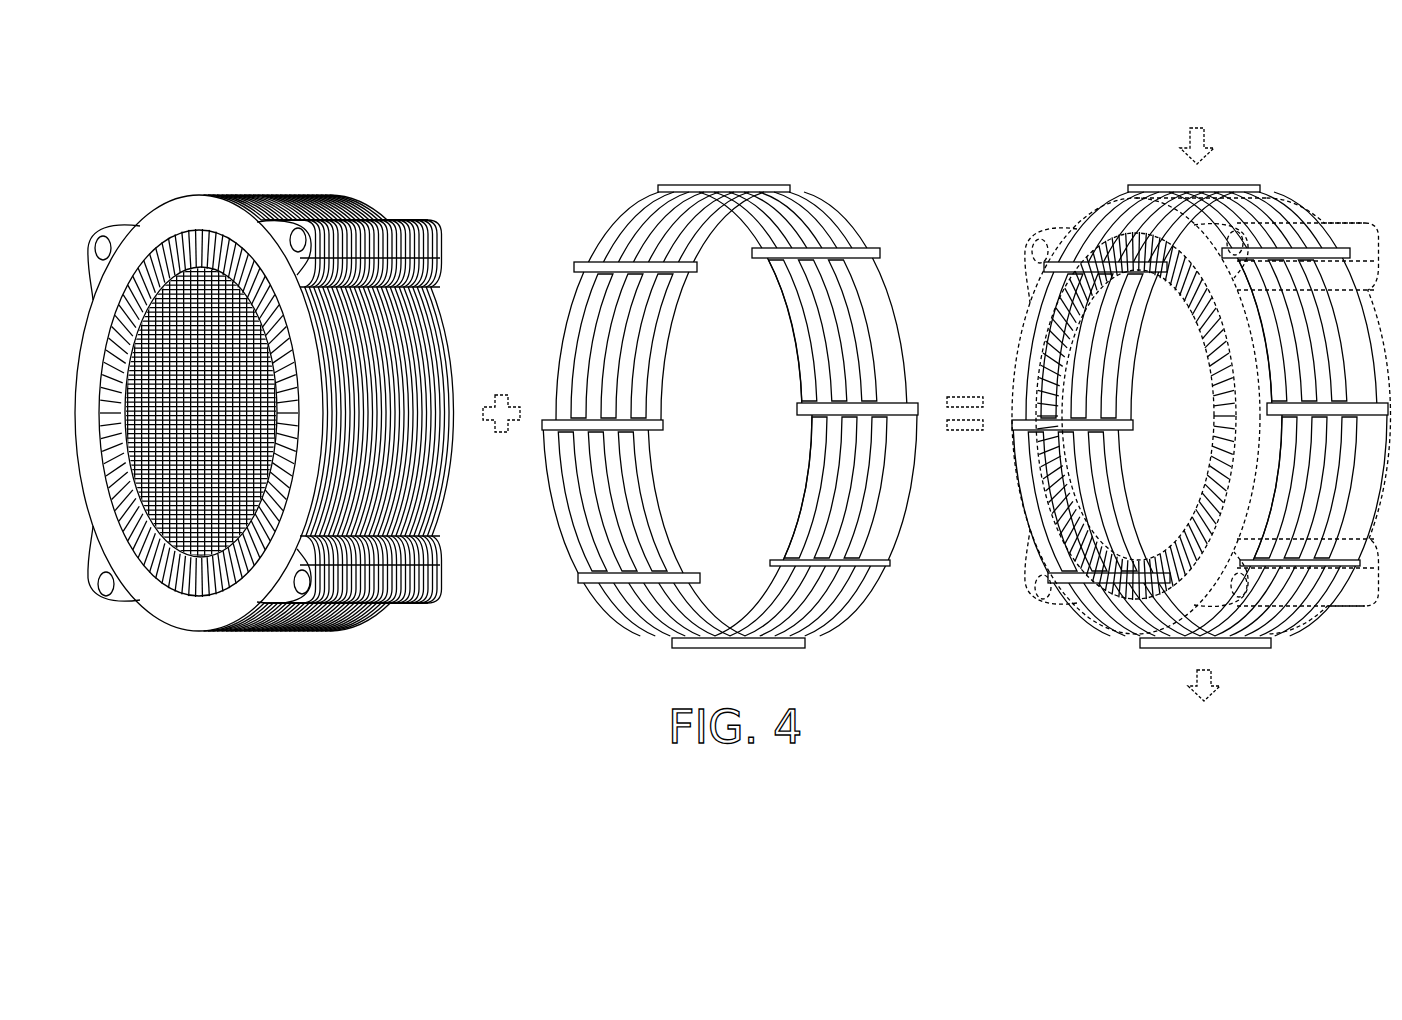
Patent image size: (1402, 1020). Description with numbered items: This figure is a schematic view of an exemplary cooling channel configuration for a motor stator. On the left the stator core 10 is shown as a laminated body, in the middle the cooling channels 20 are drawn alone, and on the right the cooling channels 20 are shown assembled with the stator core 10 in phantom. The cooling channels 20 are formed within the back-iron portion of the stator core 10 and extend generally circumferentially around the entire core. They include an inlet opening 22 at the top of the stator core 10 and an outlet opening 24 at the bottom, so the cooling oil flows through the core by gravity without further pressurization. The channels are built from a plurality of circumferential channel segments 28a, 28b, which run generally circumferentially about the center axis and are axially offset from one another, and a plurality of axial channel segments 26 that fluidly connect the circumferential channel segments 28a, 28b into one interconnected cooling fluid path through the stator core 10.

The stator core 10 is at (459, 207).
The cooling channels 20 is at (733, 383).
The inlet opening 22 is at (757, 185).
The outlet opening 24 is at (785, 648).
The axial channel segments 26 is at (828, 256).
The circumferential channel segments 28a is at (830, 372).
The circumferential channel segments 28b is at (623, 372).